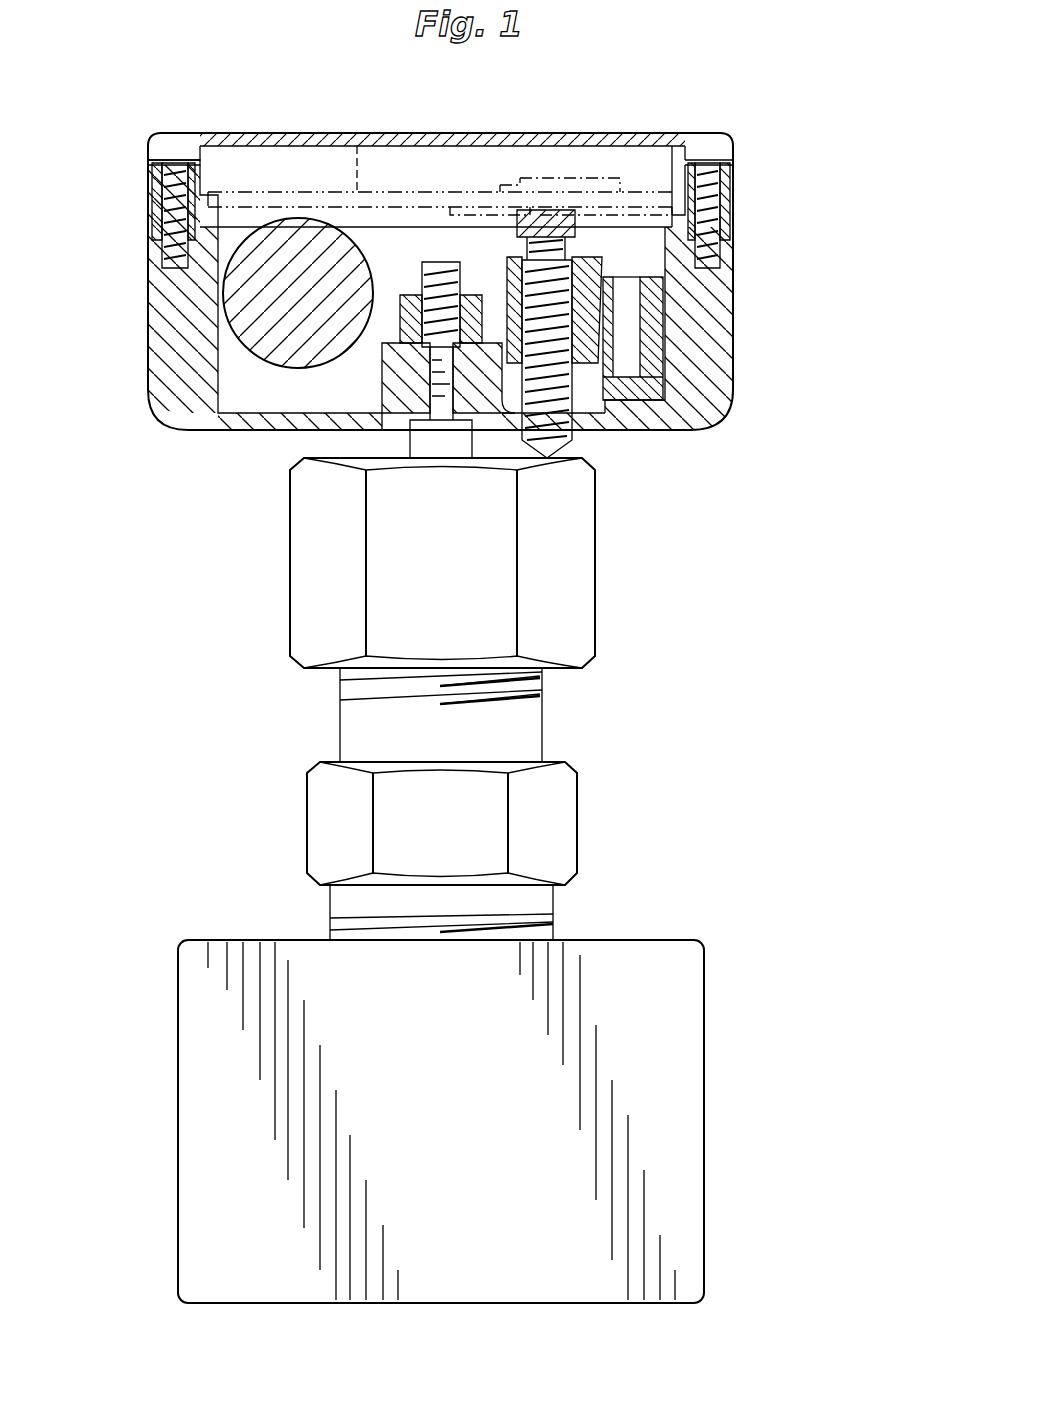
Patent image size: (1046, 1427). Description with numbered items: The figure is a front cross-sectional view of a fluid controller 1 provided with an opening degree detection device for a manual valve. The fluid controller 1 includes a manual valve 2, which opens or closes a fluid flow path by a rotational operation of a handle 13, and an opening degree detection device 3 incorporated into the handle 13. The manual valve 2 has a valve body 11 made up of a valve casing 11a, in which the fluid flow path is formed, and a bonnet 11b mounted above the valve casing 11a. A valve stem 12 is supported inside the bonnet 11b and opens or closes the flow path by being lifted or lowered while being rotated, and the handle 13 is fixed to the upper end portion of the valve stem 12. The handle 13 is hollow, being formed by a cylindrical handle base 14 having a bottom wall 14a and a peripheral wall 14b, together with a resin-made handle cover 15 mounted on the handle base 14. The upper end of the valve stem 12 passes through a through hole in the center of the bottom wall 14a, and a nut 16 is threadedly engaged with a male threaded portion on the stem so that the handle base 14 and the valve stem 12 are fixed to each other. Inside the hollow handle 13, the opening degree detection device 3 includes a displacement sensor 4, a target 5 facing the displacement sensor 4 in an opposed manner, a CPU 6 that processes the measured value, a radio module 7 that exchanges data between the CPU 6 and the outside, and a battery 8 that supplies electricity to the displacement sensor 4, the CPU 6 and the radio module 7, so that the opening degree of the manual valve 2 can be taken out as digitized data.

The fluid controller 1 is at (787, 372).
The manual valve 2 is at (680, 890).
The opening degree detection device 3 is at (660, 275).
The displacement sensor 4 is at (616, 330).
The target 5 is at (588, 262).
The CPU 6 is at (359, 146).
The radio module 7 is at (565, 178).
The battery 8 is at (240, 290).
The valve body 11 is at (705, 973).
The valve casing 11a is at (685, 1148).
The bonnet 11b is at (575, 602).
The valve stem 12 is at (420, 440).
The handle 13 is at (733, 300).
The handle base 14 is at (170, 354).
The bottom wall 14a is at (618, 422).
The peripheral wall 14b is at (713, 375).
The handle cover 15 is at (284, 133).
The nut 16 is at (265, 418).